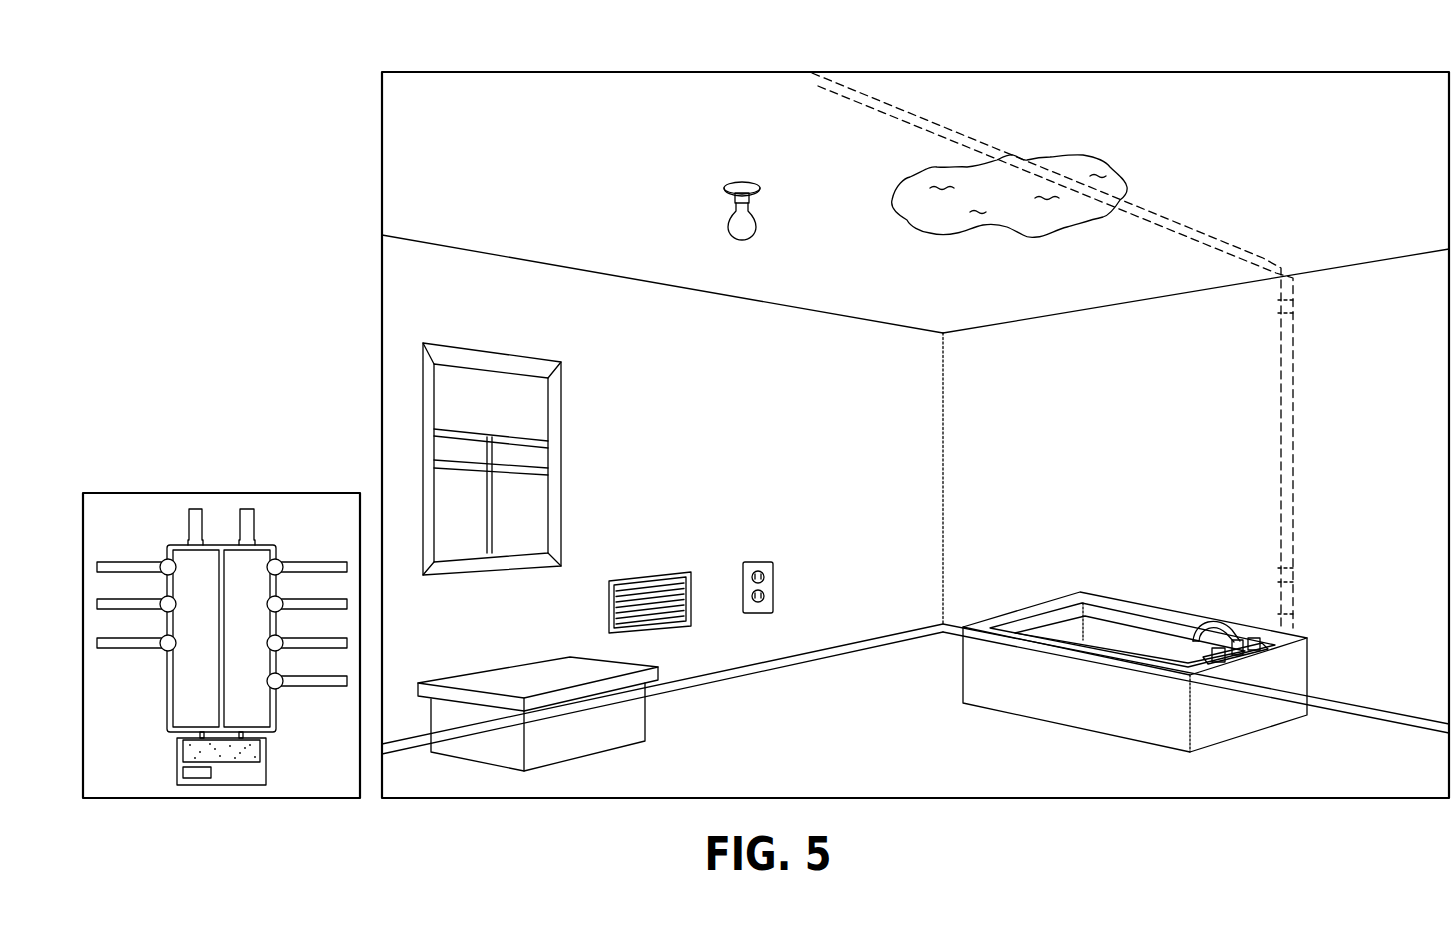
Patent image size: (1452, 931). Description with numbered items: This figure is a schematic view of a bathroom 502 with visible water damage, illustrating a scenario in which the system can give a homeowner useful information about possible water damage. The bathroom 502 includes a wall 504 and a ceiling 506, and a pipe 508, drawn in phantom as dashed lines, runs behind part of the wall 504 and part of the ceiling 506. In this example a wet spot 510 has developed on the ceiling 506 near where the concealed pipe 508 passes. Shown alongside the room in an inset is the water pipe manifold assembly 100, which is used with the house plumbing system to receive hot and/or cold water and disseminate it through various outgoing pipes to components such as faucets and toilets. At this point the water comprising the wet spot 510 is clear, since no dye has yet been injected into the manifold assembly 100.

The water pipe manifold assembly 100 is at (286, 521).
The bathroom 502 is at (587, 112).
The wall 504 is at (1397, 490).
The ceiling 506 is at (1333, 181).
The pipe 508 is at (1176, 222).
The wet spot 510 is at (1008, 233).